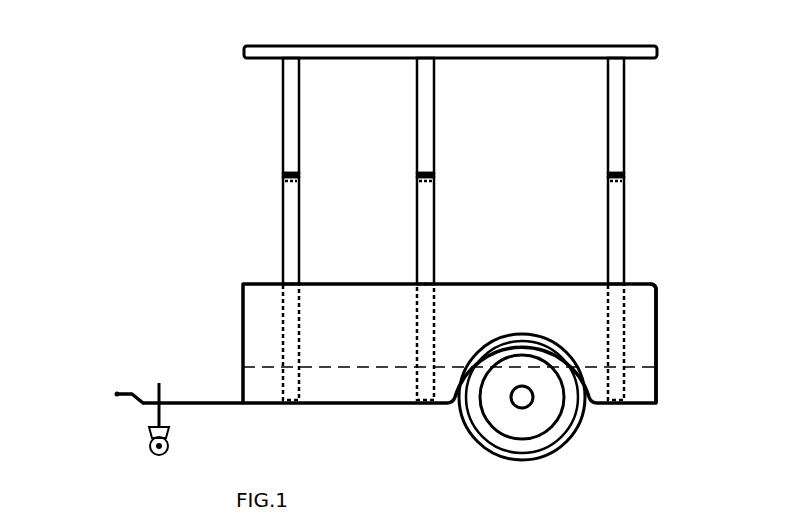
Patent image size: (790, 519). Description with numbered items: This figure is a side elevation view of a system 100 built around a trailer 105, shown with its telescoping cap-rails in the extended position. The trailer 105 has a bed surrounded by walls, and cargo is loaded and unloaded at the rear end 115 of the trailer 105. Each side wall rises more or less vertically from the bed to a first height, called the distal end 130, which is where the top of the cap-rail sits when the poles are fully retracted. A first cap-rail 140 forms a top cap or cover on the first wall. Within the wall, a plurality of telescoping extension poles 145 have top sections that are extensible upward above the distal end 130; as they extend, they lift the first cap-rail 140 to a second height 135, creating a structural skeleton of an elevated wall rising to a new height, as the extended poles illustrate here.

The system 100 is at (140, 169).
The trailer 105 is at (240, 340).
The rear end 115 is at (700, 287).
The distal end 130 is at (338, 303).
The second height 135 is at (392, 355).
The first cap-rail 140 is at (244, 52).
The telescoping extension poles 145 is at (432, 209).